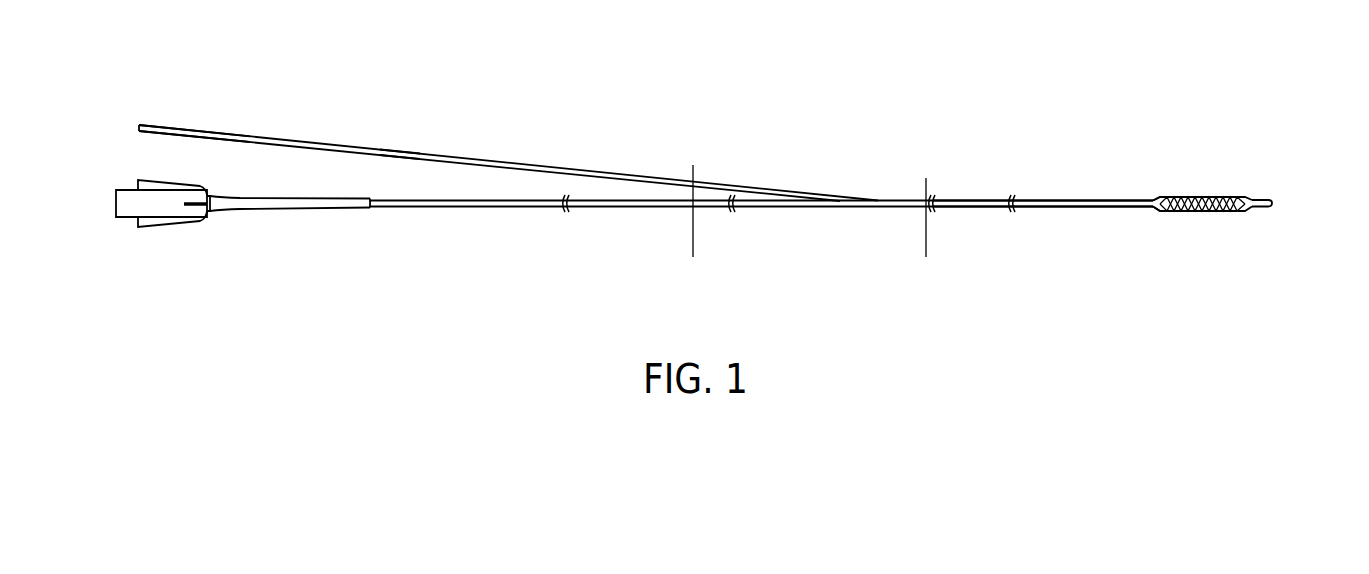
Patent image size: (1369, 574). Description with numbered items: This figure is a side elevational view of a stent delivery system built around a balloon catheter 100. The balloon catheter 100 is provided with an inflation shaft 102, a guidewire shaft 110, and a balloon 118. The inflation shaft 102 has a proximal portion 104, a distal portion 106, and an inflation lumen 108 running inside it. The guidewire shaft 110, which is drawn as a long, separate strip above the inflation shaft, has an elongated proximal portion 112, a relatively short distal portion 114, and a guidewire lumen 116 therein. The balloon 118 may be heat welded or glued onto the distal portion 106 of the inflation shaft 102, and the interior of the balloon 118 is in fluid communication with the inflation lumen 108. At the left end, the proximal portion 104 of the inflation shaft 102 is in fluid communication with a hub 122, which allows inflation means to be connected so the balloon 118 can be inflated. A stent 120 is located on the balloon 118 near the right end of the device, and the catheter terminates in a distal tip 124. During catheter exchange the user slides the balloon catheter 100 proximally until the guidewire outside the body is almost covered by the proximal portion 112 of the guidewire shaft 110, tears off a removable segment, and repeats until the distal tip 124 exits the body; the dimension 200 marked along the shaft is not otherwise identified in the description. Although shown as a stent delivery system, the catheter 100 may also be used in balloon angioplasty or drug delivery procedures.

The balloon catheter 100 is at (163, 92).
The inflation shaft 102 is at (542, 209).
The proximal portion 104 is at (307, 210).
The distal portion 106 is at (1172, 201).
The inflation lumen 108 is at (432, 208).
The guidewire shaft 110 is at (435, 153).
The elongated proximal portion 112 is at (220, 133).
The distal portion 114 is at (1043, 200).
The guidewire lumen 116 is at (397, 151).
The balloon 118 is at (1153, 195).
The stent 120 is at (1195, 212).
The hub 122 is at (167, 238).
The distal tip 124 is at (1272, 198).
The length dimension 200 is at (925, 239).